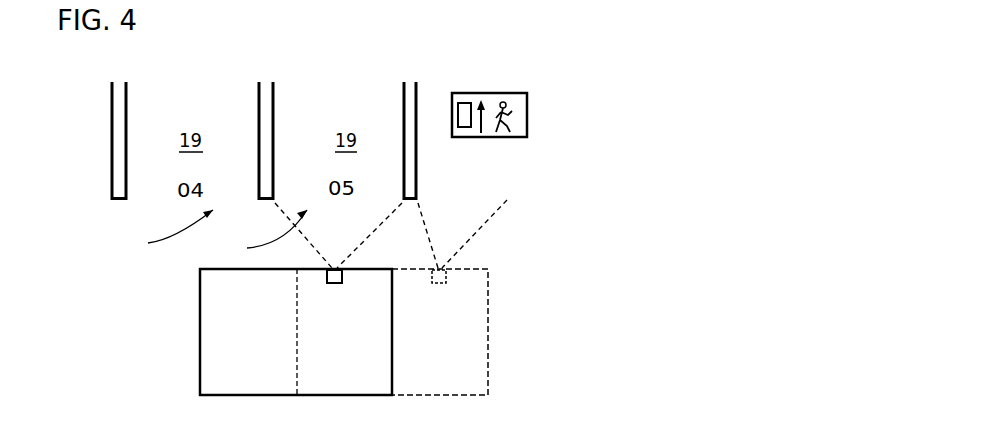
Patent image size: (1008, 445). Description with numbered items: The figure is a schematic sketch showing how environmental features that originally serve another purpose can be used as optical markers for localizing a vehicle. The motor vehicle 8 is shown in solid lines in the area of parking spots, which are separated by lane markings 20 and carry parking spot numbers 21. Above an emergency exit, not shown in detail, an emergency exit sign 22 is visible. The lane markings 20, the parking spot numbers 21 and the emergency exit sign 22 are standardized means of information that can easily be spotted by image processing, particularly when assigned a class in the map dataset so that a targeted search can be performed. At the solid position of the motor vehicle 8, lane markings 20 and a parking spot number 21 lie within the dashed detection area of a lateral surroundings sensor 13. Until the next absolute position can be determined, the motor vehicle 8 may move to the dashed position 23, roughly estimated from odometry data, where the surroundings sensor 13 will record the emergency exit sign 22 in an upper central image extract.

The motor vehicle 8 is at (200, 312).
The lateral surroundings sensor 13 is at (330, 287).
The lane markings 20 is at (110, 167).
The parking spot numbers 21 is at (213, 236).
The emergency exit sign 22 is at (478, 93).
The position 23 is at (488, 360).